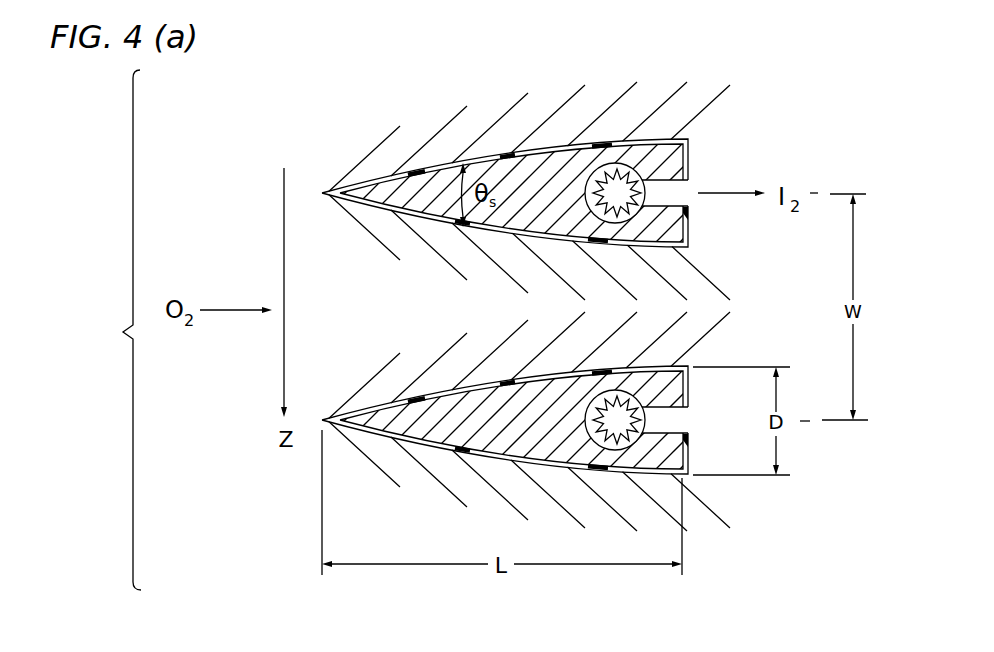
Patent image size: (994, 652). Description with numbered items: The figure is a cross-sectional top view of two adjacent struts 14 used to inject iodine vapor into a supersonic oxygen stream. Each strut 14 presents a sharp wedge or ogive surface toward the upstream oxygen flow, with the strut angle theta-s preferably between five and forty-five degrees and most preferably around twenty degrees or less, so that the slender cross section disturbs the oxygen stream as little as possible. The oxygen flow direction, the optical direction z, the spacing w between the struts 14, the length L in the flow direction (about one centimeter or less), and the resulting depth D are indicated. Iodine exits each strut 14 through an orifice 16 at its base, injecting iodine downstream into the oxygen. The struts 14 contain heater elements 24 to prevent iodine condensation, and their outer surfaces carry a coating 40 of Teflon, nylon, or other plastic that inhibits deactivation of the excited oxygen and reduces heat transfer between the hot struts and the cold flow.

The strut 14 is at (417, 181).
The coating 40 is at (548, 146).
The heater element 24 is at (645, 172).
The orifice 16 is at (681, 196).